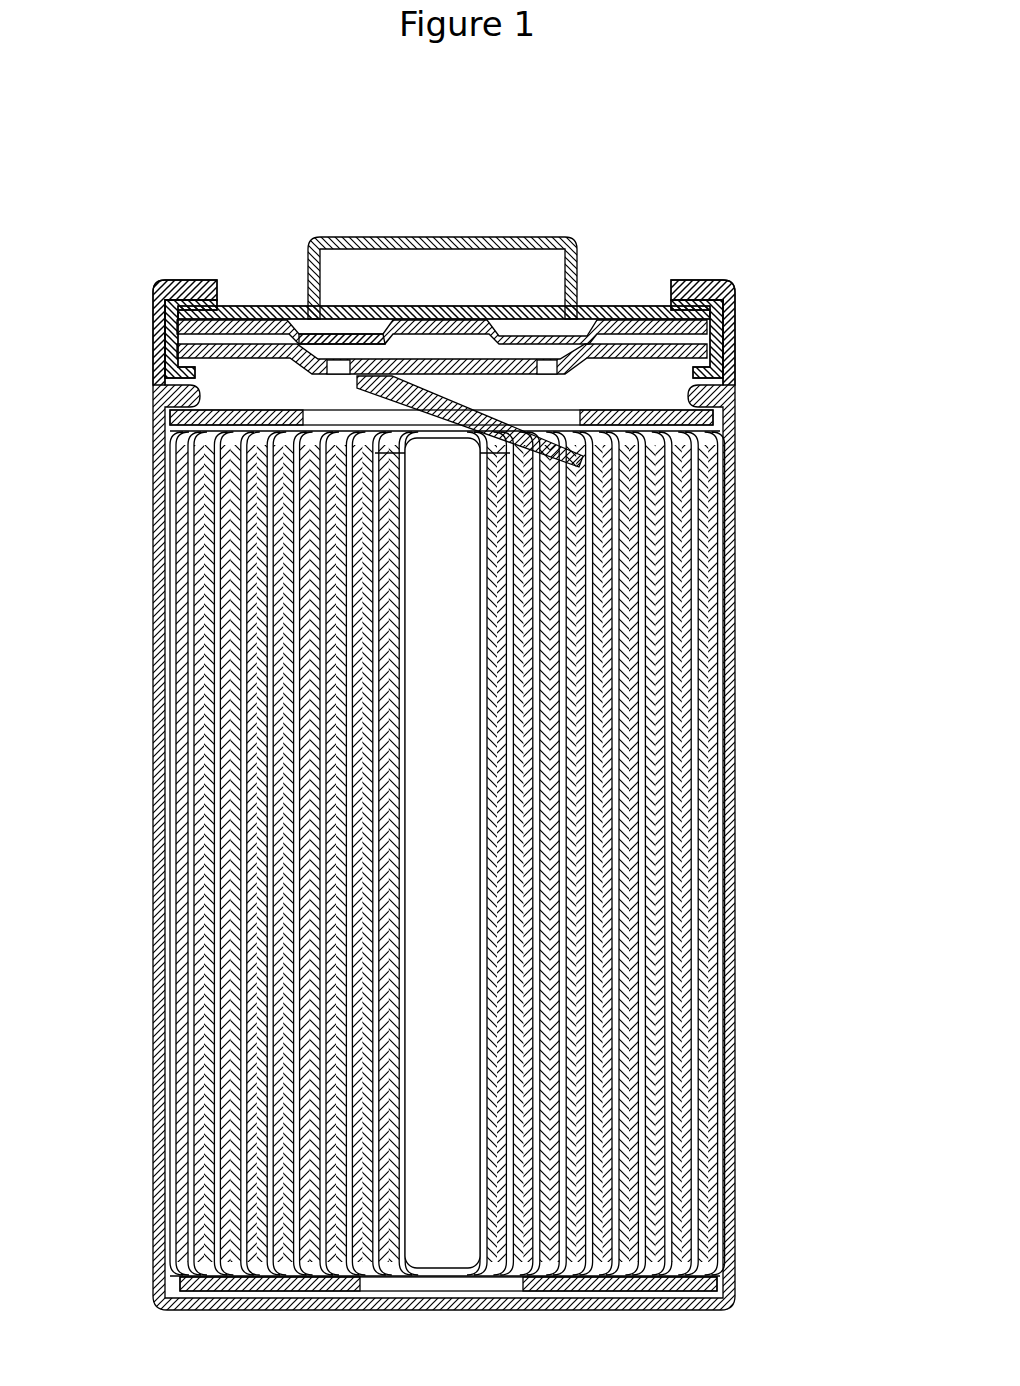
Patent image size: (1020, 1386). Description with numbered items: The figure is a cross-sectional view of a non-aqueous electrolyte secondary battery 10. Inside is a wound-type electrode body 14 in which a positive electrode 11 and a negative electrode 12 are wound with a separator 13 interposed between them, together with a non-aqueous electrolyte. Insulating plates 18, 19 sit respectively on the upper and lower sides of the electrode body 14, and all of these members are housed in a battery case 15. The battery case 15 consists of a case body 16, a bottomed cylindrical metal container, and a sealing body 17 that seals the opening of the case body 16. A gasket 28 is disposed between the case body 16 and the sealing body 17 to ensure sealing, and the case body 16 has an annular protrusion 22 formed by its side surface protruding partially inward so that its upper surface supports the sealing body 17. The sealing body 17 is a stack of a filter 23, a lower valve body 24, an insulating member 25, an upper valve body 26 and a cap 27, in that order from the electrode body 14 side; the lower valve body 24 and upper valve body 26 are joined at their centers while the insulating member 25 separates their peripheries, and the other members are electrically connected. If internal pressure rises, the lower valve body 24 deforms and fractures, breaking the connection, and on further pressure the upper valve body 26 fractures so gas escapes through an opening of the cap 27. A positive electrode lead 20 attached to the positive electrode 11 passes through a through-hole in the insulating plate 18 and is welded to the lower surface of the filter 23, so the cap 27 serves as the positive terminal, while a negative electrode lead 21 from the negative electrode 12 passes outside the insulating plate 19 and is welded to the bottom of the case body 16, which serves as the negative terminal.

The non-aqueous electrolyte secondary battery 10 is at (748, 86).
The positive electrode 11 is at (721, 927).
The negative electrode 12 is at (734, 965).
The separator 13 is at (746, 1000).
The wound-type electrode body 14 is at (534, 853).
The battery case 15 is at (713, 173).
The case body 16 is at (697, 282).
The sealing body 17 is at (610, 305).
The insulating plate 18 is at (728, 428).
The insulating plate 19 is at (736, 1290).
The positive electrode lead 20 is at (357, 400).
The negative electrode lead 21 is at (176, 1283).
The protrusion 22 is at (164, 400).
The filter 23 is at (443, 373).
The lower valve body 24 is at (325, 321).
The insulating member 25 is at (258, 305).
The upper valve body 26 is at (355, 334).
The cap 27 is at (525, 238).
The gasket 28 is at (736, 300).